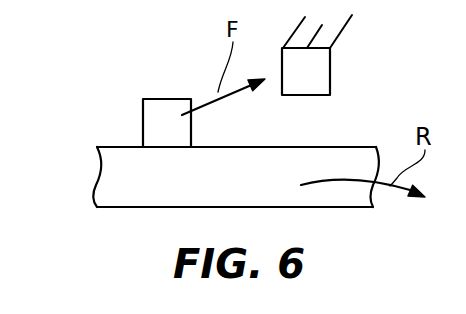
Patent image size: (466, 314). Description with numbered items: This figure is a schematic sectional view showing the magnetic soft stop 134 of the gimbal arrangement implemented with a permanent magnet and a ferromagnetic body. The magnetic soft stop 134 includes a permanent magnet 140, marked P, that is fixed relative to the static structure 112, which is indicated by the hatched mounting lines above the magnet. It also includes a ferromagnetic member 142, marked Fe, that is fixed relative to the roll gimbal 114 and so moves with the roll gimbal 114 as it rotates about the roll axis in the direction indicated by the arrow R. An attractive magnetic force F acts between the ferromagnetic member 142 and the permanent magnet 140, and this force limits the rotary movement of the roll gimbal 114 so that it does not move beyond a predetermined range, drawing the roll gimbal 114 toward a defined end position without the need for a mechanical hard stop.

The magnetic soft stop 134 is at (137, 43).
The ferromagnetic member 142 is at (143, 126).
The permanent magnet 140 is at (330, 67).
The static structure 112 is at (340, 35).
The roll gimbal 114 is at (135, 170).